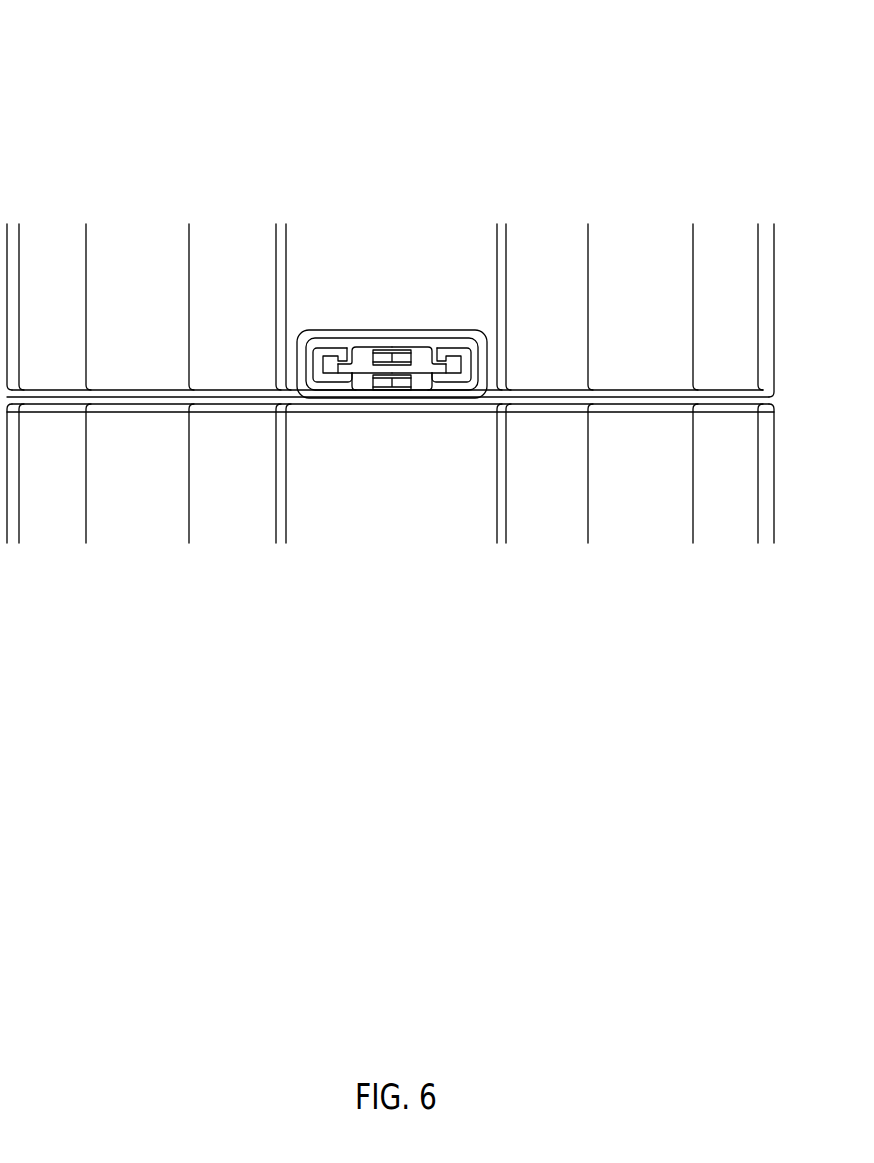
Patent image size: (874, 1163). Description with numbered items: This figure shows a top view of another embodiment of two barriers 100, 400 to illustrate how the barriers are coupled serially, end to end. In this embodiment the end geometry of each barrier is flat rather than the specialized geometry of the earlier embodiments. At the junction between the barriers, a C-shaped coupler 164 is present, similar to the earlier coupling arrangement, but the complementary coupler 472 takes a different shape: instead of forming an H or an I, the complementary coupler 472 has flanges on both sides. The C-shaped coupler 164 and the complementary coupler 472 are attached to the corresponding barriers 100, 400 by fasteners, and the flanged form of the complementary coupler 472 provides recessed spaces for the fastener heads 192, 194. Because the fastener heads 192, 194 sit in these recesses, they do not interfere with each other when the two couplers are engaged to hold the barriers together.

The barrier 400 is at (100, 74).
The barrier 100 is at (186, 587).
The C-shaped coupler 164 is at (417, 398).
The complementary coupler 472 is at (350, 343).
The fastener head 192 is at (410, 353).
The fastener head 194 is at (382, 383).